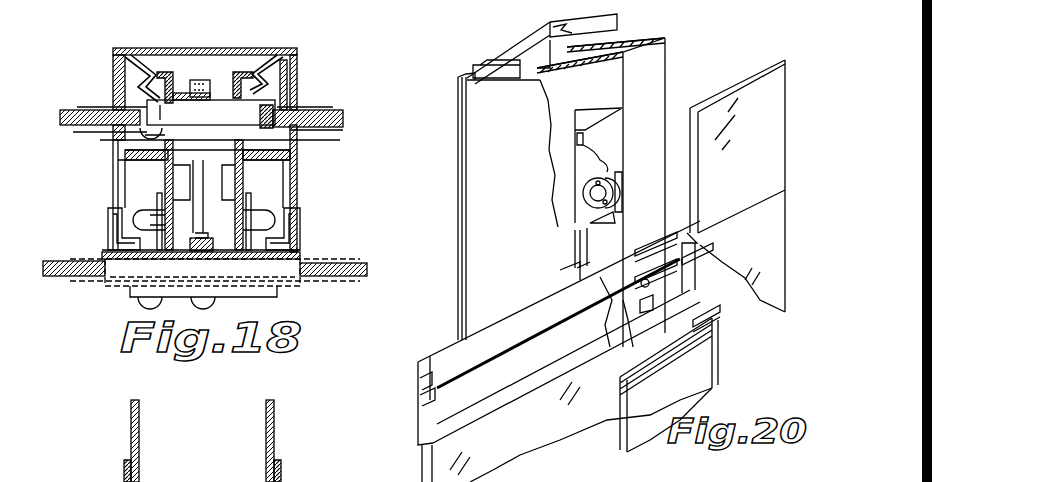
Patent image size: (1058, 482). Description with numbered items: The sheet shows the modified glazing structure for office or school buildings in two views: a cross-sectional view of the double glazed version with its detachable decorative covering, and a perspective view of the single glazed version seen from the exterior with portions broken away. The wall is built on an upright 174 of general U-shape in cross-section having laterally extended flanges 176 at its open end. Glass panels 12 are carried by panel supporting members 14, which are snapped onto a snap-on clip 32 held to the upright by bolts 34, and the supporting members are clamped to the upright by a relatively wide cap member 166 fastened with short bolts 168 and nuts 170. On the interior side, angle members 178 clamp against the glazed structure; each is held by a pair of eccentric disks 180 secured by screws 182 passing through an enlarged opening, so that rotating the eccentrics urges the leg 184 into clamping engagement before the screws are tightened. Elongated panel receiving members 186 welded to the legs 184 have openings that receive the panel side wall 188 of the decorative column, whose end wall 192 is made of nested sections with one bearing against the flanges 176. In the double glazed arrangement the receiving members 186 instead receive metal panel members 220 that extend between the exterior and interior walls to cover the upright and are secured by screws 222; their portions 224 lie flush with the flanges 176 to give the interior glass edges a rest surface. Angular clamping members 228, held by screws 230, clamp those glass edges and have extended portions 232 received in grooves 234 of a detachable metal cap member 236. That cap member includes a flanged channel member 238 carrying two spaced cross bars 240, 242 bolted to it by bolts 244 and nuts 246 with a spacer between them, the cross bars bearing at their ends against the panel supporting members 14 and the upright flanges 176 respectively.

In FIG. 20, the panel 12 is at (733, 176).
In FIG. 20, the panel supporting member 14 is at (480, 404).
In FIG. 20, the snap-on clip 32 is at (592, 310).
In FIG. 20, the bolt 34 is at (590, 345).
In FIG. 18, the cap member 166 is at (150, 297).
In FIG. 20, the cap member 166 is at (692, 378).
In FIG. 18, the short bolt 168 is at (212, 297).
In FIG. 18, the nut 170 is at (235, 224).
In FIG. 18, the upright 174 is at (300, 180).
In FIG. 20, the upright 174 is at (665, 60).
In FIG. 18, the flange 176 is at (320, 163).
In FIG. 20, the flange 176 is at (520, 65).
In FIG. 18, the angle member 178 is at (125, 184).
In FIG. 20, the angle member 178 is at (582, 120).
In FIG. 18, the eccentric disk 180 is at (160, 202).
In FIG. 20, the eccentric disk 180 is at (612, 170).
In FIG. 18, the screw 182 is at (143, 220).
In FIG. 20, the screw 182 is at (583, 202).
In FIG. 20, the leg 184 is at (690, 90).
In FIG. 18, the panel receiving member 186 is at (115, 245).
In FIG. 20, the panel receiving member 186 is at (577, 263).
In FIG. 20, the panel side wall 188 is at (483, 250).
In FIG. 20, the end wall 192 is at (530, 40).
In FIG. 18, the metal panel member 220 is at (122, 226).
In FIG. 18, the screw 222 is at (118, 148).
In FIG. 18, the portion 224 is at (113, 130).
In FIG. 18, the angular clamping member 228 is at (113, 80).
In FIG. 18, the screw 230 is at (233, 72).
In FIG. 18, the extended portion 232 is at (125, 96).
In FIG. 18, the groove 234 is at (124, 62).
In FIG. 18, the cap member 236 is at (297, 52).
In FIG. 18, the flanged channel member 238 is at (173, 72).
In FIG. 18, the cross bar 240 is at (135, 48).
In FIG. 18, the cross bar 242 is at (204, 182).
In FIG. 18, the bolt 244 is at (158, 128).
In FIG. 18, the nut 246 is at (212, 87).